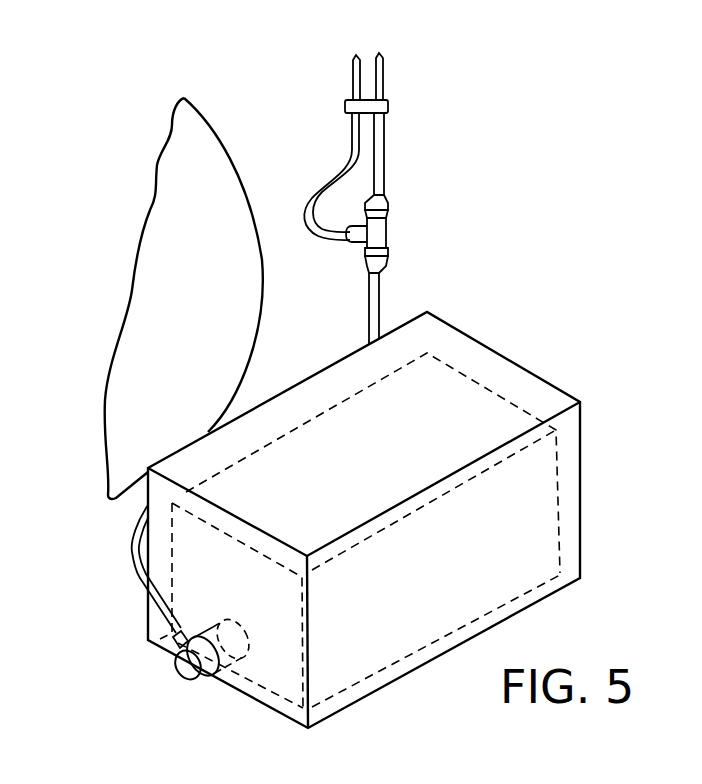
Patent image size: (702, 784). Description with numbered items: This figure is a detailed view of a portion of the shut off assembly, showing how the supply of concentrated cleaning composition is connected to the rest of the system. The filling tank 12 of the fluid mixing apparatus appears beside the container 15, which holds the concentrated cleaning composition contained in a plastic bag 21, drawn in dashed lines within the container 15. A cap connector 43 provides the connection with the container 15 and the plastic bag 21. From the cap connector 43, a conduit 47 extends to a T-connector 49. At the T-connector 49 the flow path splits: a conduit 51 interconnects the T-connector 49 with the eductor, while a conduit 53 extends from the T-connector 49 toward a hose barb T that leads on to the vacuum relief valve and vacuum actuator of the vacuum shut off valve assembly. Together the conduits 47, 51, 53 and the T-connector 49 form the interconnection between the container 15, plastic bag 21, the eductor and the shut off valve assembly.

The filling tank 12 is at (172, 207).
The container 15 is at (453, 332).
The plastic bag 21 is at (527, 473).
The cap connector 43 is at (178, 671).
The conduit 47 is at (132, 550).
The T-connector 49 is at (383, 222).
The conduit 51 is at (383, 153).
The conduit 53 is at (348, 138).